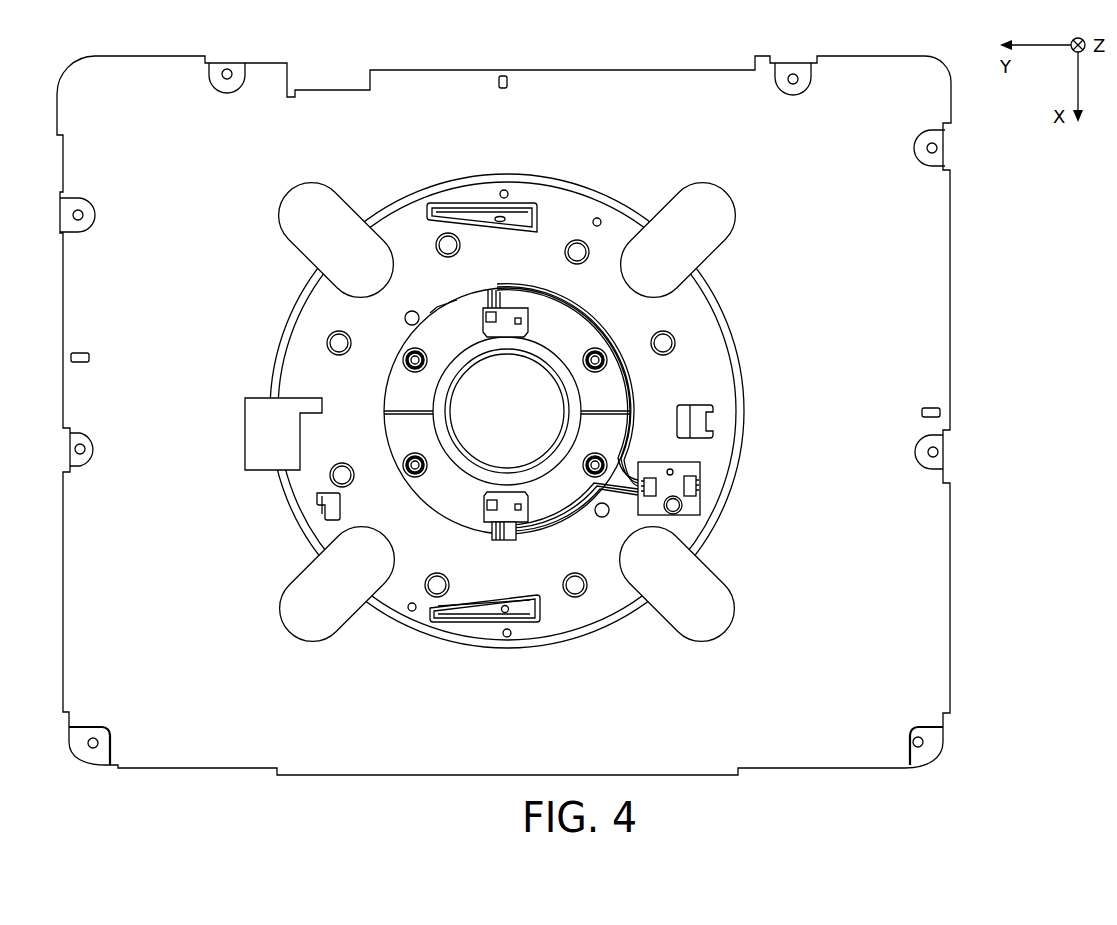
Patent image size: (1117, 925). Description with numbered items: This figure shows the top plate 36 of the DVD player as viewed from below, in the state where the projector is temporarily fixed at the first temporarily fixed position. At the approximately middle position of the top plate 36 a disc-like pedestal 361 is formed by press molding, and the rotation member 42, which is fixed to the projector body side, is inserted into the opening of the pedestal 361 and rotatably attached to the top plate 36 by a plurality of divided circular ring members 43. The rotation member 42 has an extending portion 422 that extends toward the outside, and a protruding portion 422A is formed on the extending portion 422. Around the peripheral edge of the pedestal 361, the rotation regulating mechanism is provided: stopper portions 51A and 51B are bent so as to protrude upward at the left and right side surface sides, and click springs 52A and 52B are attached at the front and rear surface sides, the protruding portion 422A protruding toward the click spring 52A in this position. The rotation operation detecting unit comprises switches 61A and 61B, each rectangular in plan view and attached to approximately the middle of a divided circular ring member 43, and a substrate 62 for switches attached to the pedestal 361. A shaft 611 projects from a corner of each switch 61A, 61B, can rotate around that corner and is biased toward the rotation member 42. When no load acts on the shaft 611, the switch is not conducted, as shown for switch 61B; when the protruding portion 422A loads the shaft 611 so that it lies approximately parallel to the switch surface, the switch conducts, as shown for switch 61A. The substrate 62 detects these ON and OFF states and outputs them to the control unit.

The top plate 36 is at (938, 353).
The pedestal 361 is at (708, 341).
The rotation member 42 is at (444, 468).
The extending portion 422 is at (440, 432).
The protruding portion 422A is at (490, 490).
The divided circular ring member 43 is at (396, 402).
The stopper portion 51A is at (312, 506).
The stopper portion 51B is at (717, 422).
The click spring 52A is at (524, 641).
The click spring 52B is at (522, 192).
The switch 61A is at (528, 545).
The switch 61B is at (513, 302).
The shaft 611 is at (528, 328).
The substrate for switches 62 is at (695, 508).